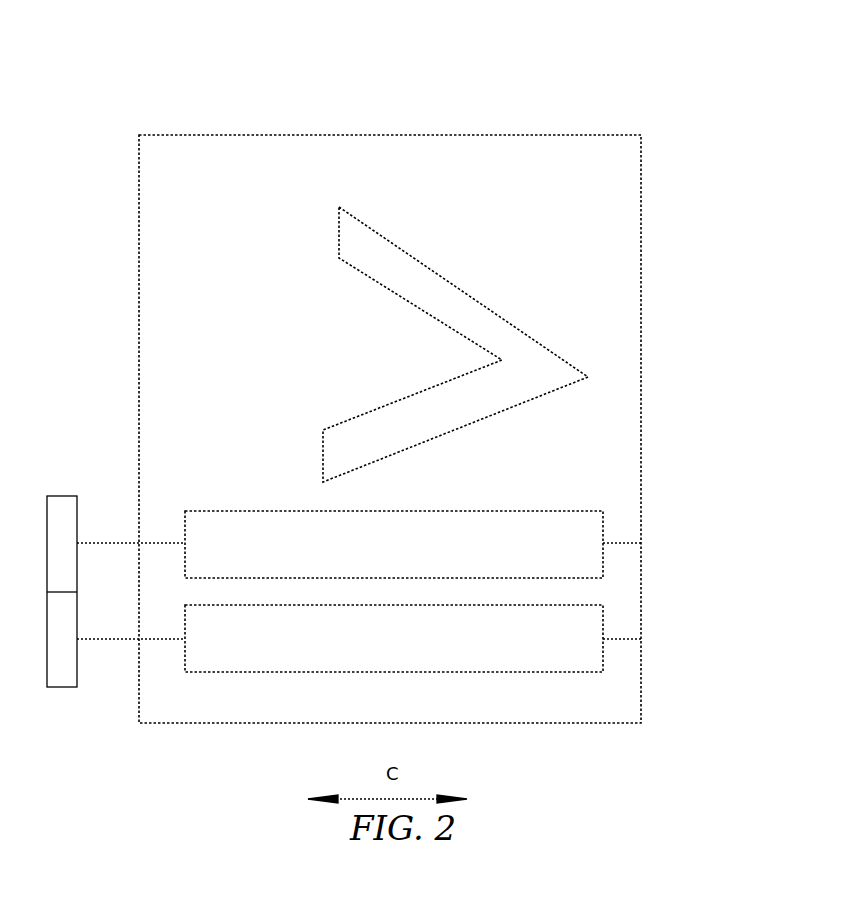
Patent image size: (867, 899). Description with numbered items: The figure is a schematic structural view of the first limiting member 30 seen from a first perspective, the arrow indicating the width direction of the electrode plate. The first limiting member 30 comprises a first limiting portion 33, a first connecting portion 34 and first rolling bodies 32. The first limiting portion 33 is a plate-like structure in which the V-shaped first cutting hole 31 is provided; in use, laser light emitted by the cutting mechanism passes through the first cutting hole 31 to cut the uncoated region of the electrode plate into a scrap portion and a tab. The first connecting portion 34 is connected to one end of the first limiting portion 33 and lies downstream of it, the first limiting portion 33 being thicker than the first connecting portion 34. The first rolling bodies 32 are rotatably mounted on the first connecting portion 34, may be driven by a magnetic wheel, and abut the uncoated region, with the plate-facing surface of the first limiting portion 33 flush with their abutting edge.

The first limiting member 30 is at (393, 41).
The first cutting hole 31 is at (528, 373).
The first rolling body 32 is at (573, 548).
The first limiting portion 33 is at (172, 268).
The first connecting portion 34 is at (641, 607).